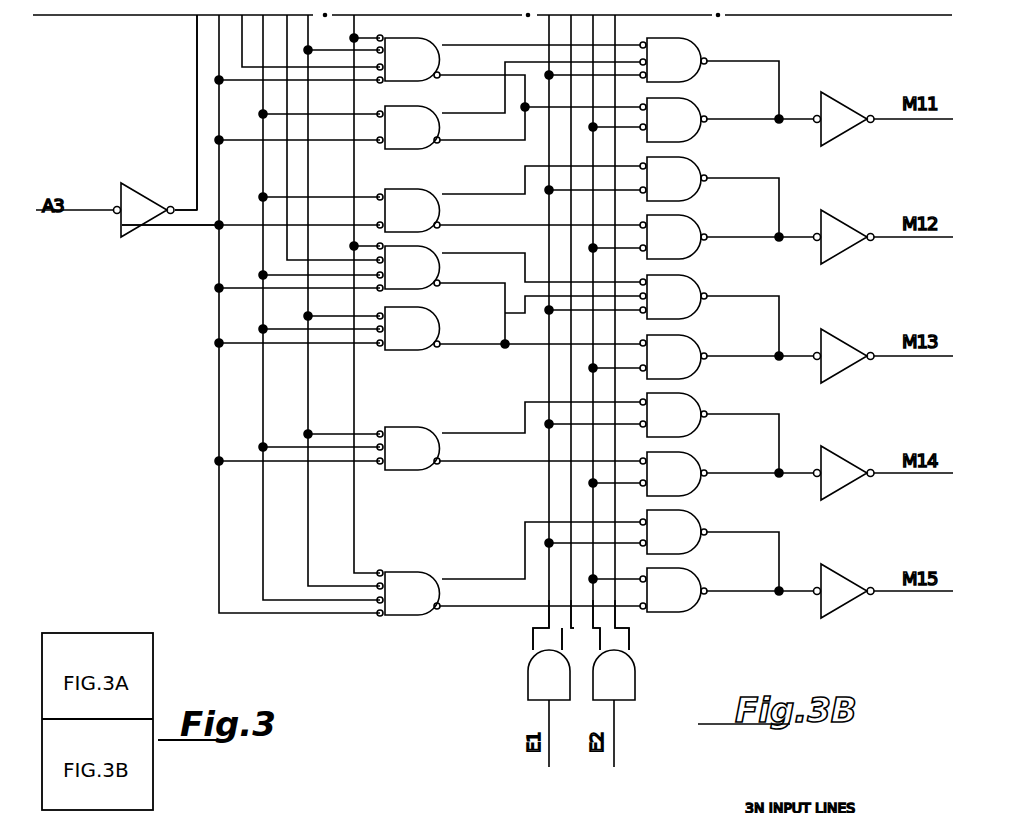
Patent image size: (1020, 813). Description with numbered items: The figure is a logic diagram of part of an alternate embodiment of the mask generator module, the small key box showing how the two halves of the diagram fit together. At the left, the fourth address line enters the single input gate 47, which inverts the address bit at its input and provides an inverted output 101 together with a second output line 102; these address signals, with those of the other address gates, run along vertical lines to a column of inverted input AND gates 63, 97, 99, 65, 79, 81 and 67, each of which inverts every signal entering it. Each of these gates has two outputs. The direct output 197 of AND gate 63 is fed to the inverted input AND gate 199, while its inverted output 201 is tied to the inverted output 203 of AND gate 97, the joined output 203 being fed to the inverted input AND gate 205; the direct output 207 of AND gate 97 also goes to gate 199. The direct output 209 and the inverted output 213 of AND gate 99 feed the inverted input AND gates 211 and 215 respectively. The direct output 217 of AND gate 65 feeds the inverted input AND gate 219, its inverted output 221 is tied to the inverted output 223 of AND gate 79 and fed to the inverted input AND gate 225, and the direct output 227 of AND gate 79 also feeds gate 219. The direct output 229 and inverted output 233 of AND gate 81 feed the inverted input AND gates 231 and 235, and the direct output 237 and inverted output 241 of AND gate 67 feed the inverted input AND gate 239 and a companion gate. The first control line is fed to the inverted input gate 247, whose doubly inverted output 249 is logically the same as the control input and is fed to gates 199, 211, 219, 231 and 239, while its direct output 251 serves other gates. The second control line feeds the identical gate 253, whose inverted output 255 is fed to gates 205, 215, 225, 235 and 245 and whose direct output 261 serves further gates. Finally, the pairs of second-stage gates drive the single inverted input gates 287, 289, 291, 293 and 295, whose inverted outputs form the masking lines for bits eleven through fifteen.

The single input gate 47 is at (128, 185).
The inverted output of gate 47 101 is at (184, 207).
The true address line 102 is at (174, 228).
The inverted input AND gate 63 is at (440, 59).
The inverted input AND gate 97 is at (440, 127).
The inverted input AND gate 99 is at (440, 210).
The inverted input AND gate 65 is at (440, 267).
The inverted input AND gate 79 is at (412, 346).
The inverted input AND gate 81 is at (408, 463).
The inverted input AND gate 67 is at (408, 606).
The direct output of AND gate 63 197 is at (500, 45).
The inverted output of AND gate 63 201 is at (465, 76).
The inverted output of AND gate 97 203 is at (468, 143).
The direct output of AND gate 97 207 is at (466, 112).
The direct output of AND gate 99 209 is at (525, 182).
The inverted output of AND gate 99 213 is at (530, 224).
The direct output of AND gate 65 217 is at (503, 252).
The inverted output of AND gate 65 221 is at (503, 300).
The inverted output of AND gate 79 223 is at (483, 348).
The direct output of AND gate 79 227 is at (455, 313).
The direct output of AND gate 81 229 is at (502, 432).
The inverted output of AND gate 81 233 is at (497, 463).
The direct output of AND gate 67 237 is at (495, 578).
The inverted output of AND gate 67 241 is at (458, 608).
The inverted input AND gate 199 is at (688, 52).
The inverted input AND gate 205 is at (688, 112).
The inverted input AND gate 211 is at (688, 167).
The inverted input AND gate 215 is at (687, 230).
The inverted input AND gate 219 is at (687, 287).
The inverted input AND gate 225 is at (688, 347).
The inverted input AND gate 231 is at (688, 405).
The inverted input AND gate 235 is at (688, 460).
The inverted input AND gate 239 is at (688, 520).
The inverted input AND gate 245 is at (688, 580).
The inverted input gate 247 is at (528, 692).
The inverted output of gate 247 249 is at (533, 648).
The direct output of gate 247 251 is at (533, 633).
The gate 253 is at (635, 692).
The inverted output of gate 253 255 is at (628, 631).
The direct output of gate 253 261 is at (630, 650).
The single inverted input gate 287 is at (835, 103).
The single inverted input gate 289 is at (836, 225).
The single inverted input gate 291 is at (838, 335).
The single inverted input gate 293 is at (838, 455).
The single inverted input gate 295 is at (838, 572).